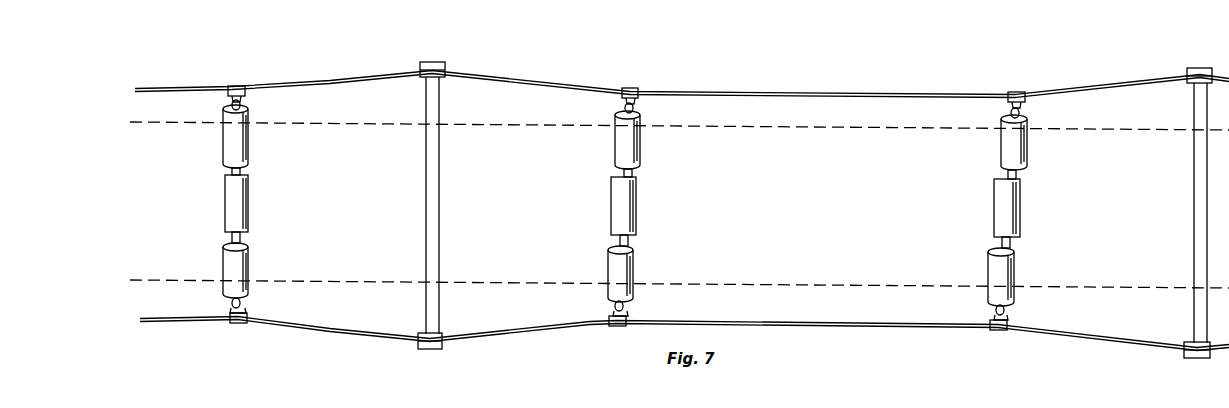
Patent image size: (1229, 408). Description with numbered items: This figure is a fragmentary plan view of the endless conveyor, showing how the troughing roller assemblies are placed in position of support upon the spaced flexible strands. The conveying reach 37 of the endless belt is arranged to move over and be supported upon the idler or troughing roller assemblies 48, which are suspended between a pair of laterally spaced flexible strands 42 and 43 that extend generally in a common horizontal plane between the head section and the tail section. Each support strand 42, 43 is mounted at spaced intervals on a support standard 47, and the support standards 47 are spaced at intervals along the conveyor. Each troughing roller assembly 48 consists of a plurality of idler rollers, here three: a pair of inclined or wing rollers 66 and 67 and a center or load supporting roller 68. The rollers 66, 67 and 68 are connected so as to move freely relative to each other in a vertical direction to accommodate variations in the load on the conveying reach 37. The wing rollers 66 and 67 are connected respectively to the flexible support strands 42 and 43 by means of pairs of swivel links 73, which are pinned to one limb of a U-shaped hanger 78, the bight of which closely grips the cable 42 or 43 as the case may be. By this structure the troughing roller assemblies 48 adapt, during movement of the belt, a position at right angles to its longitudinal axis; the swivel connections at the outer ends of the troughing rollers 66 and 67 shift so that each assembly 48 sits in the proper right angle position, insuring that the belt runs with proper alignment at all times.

The conveying reach 37 is at (478, 123).
The flexible support strand 42 is at (505, 337).
The flexible support strand 43 is at (835, 92).
The support standard 47 is at (420, 346).
The troughing roller assembly 48 is at (600, 215).
The wing roller 66 is at (224, 271).
The wing roller 67 is at (224, 151).
The center roller 68 is at (225, 211).
The swivel link 73 is at (233, 99).
The U-shaped hanger 78 is at (630, 92).